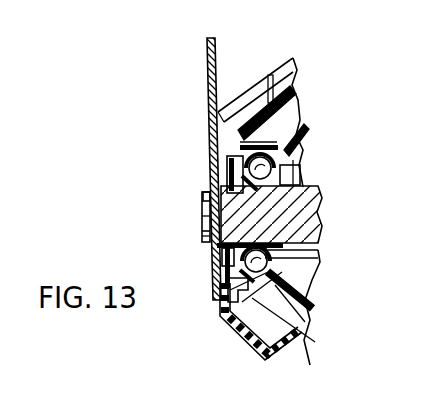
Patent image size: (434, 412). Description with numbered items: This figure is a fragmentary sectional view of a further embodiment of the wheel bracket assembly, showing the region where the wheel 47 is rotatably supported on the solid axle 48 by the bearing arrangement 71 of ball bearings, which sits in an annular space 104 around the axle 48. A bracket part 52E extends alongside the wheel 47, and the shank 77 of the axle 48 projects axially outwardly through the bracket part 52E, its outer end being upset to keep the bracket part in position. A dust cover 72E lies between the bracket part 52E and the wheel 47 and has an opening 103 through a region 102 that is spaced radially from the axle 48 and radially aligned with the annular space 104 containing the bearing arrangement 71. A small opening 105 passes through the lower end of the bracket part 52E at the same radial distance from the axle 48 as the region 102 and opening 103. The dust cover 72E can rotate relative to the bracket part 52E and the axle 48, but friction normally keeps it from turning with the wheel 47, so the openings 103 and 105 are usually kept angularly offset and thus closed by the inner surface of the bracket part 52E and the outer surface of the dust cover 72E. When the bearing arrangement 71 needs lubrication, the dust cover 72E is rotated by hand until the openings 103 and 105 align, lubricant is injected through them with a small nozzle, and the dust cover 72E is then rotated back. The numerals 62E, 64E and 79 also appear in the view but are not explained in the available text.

The bracket part 52E is at (207, 73).
The dust cover 72E is at (247, 82).
The wheel 47 is at (310, 101).
The axle 48 is at (324, 202).
The bracket flange 62E is at (212, 171).
The flange 64E is at (205, 200).
The shank 77 is at (203, 216).
The washer 79 is at (203, 231).
The small opening 105 is at (221, 258).
The opening 103 is at (221, 268).
The region 102 is at (213, 286).
The bearing arrangement 71 is at (300, 257).
The annular space 104 is at (302, 329).